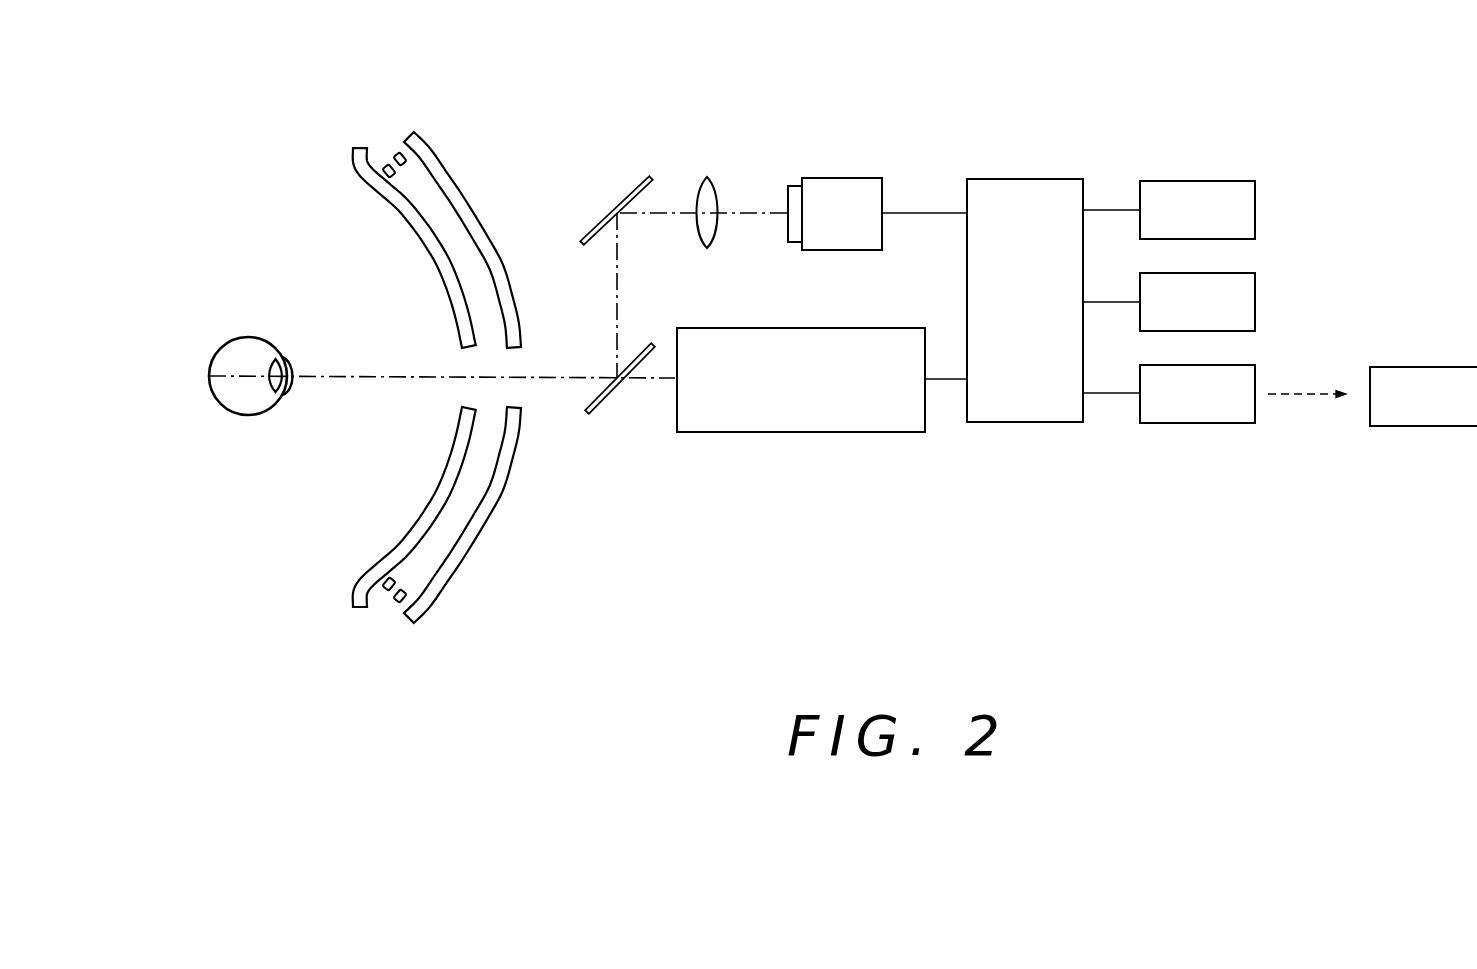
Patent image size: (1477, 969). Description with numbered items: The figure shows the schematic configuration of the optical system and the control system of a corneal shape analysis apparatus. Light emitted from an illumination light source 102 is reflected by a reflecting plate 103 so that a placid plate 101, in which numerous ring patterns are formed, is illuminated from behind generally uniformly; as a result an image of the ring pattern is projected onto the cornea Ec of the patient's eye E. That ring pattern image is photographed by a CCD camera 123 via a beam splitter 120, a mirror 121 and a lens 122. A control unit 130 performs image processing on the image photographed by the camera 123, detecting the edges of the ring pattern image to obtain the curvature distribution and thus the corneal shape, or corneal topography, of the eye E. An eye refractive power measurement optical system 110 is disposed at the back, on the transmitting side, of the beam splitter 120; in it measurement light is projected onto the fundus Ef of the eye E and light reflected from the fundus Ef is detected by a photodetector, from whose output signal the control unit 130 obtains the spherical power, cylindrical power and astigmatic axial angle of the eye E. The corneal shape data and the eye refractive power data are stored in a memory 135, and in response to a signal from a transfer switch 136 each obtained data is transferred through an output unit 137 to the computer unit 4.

The computer unit 4 is at (1452, 377).
The placid plate 101 is at (430, 241).
The illumination light source 102 is at (397, 150).
The reflecting plate 103 is at (450, 582).
The eye refractive power measurement optical system 110 is at (865, 427).
The beam splitter 120 is at (597, 415).
The mirror 121 is at (632, 188).
The lens 122 is at (707, 190).
The CCD camera 123 is at (857, 188).
The control unit 130 is at (1057, 407).
The memory 135 is at (1235, 193).
The transfer switch 136 is at (1228, 304).
The output unit 137 is at (1230, 413).
The patient's eye E is at (245, 416).
The fundus Ef is at (210, 388).
The cornea Ec is at (292, 389).